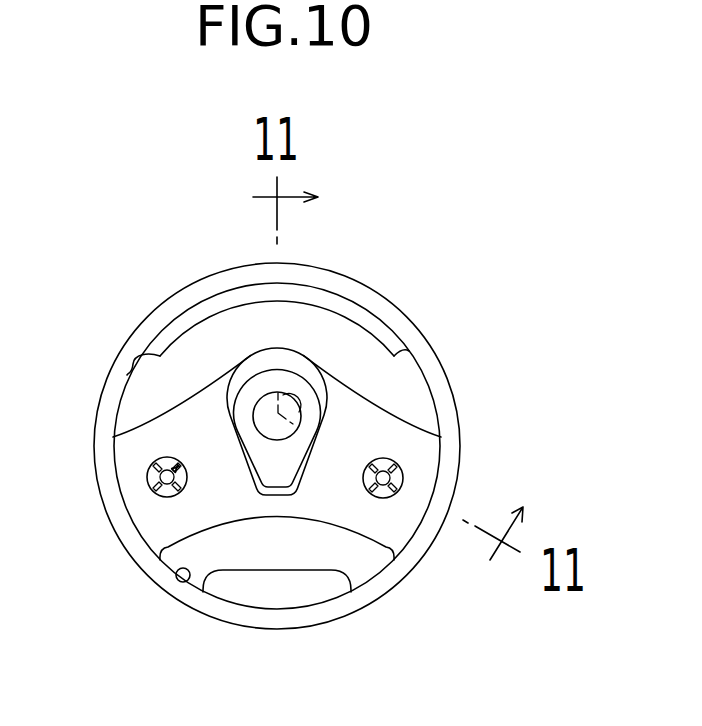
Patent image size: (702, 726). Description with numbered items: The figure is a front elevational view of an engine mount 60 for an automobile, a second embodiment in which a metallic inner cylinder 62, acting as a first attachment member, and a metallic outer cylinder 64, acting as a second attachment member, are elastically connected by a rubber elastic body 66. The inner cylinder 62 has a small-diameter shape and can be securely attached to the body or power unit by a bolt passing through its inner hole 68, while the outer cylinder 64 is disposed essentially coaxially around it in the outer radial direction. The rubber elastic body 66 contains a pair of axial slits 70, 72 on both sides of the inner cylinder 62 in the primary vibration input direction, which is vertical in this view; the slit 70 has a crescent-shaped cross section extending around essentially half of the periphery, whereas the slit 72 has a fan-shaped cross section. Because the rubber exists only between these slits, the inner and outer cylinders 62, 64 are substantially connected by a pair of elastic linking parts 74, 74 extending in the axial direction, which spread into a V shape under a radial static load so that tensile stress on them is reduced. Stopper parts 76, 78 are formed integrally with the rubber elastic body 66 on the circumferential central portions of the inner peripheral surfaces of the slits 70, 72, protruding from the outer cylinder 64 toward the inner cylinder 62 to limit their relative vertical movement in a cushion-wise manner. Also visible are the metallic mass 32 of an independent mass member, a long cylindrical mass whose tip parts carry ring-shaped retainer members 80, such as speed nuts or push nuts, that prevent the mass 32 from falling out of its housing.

The metallic mass 32 is at (160, 477).
The engine mount 60 is at (447, 285).
The inner cylinder 62 is at (260, 386).
The outer cylinder 64 is at (326, 612).
The rubber elastic body 66 is at (401, 562).
The inner hole 68 is at (300, 409).
The slit 70 is at (134, 370).
The slit 72 is at (182, 582).
The elastic linking part 74 is at (183, 440).
The stopper part 76 is at (338, 303).
The stopper part 78 is at (280, 590).
The retainer member 80 is at (168, 498).